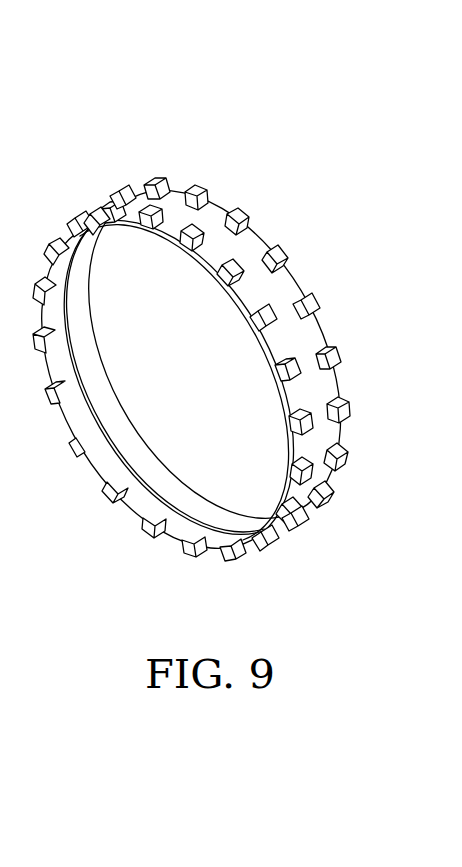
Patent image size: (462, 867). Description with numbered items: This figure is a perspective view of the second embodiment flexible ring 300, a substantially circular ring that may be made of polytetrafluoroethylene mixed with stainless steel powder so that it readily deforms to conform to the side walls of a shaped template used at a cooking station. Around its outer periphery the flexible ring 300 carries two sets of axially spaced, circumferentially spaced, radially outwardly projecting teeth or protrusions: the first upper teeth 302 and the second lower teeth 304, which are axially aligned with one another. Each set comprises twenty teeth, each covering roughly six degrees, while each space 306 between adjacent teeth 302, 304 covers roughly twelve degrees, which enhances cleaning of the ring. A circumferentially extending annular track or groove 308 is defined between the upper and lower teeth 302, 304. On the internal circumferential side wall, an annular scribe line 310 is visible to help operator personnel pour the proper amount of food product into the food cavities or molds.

The second embodiment flexible ring 300 is at (207, 324).
The first upper teeth or protrusions 302 is at (224, 282).
The second lower teeth or protrusions 304 is at (311, 296).
The space 306 is at (340, 380).
The annular track or groove 308 is at (240, 248).
The annular scribe line 310 is at (150, 484).